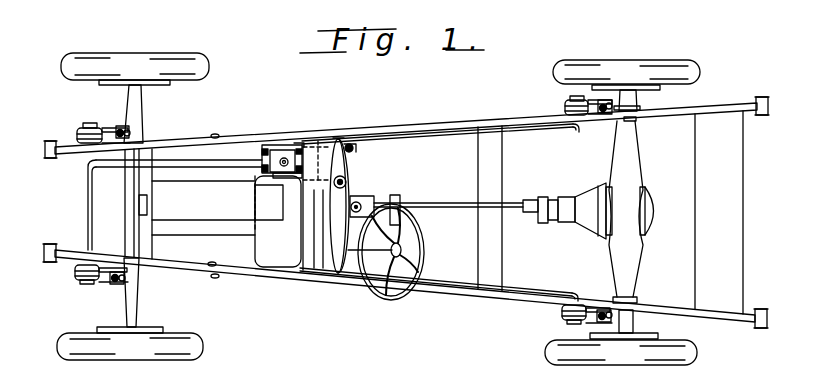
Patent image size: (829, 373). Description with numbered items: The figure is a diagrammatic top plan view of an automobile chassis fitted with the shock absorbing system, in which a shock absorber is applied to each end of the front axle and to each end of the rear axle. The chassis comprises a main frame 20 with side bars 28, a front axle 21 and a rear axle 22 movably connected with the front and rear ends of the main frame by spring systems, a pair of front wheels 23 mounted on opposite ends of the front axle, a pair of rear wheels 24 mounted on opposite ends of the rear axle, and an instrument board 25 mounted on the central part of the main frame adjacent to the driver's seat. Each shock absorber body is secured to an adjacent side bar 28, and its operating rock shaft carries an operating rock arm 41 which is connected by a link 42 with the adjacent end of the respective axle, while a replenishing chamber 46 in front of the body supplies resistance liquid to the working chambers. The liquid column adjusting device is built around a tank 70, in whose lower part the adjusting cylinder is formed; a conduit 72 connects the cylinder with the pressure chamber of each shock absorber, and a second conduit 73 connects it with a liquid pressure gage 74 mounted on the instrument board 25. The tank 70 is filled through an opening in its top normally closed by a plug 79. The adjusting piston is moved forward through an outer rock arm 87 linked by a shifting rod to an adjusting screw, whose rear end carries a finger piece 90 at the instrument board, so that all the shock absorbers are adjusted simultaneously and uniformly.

The main frame 20 is at (752, 113).
The front axle 21 is at (150, 95).
The rear axle 22 is at (636, 153).
The front wheels 23 is at (209, 66).
The rear wheels 24 is at (701, 72).
The instrument board 25 is at (340, 263).
The side bar 28 is at (302, 246).
The operating rock arm 41 is at (124, 130).
The link 42 is at (130, 133).
The replenishing chamber 46 is at (77, 133).
The tank 70 is at (266, 147).
The conduit 72 is at (88, 165).
The conduit 73 is at (288, 178).
The liquid pressure gage 74 is at (347, 182).
The plug 79 is at (285, 157).
The outer rock arm 87 is at (303, 141).
The finger piece 90 is at (351, 145).